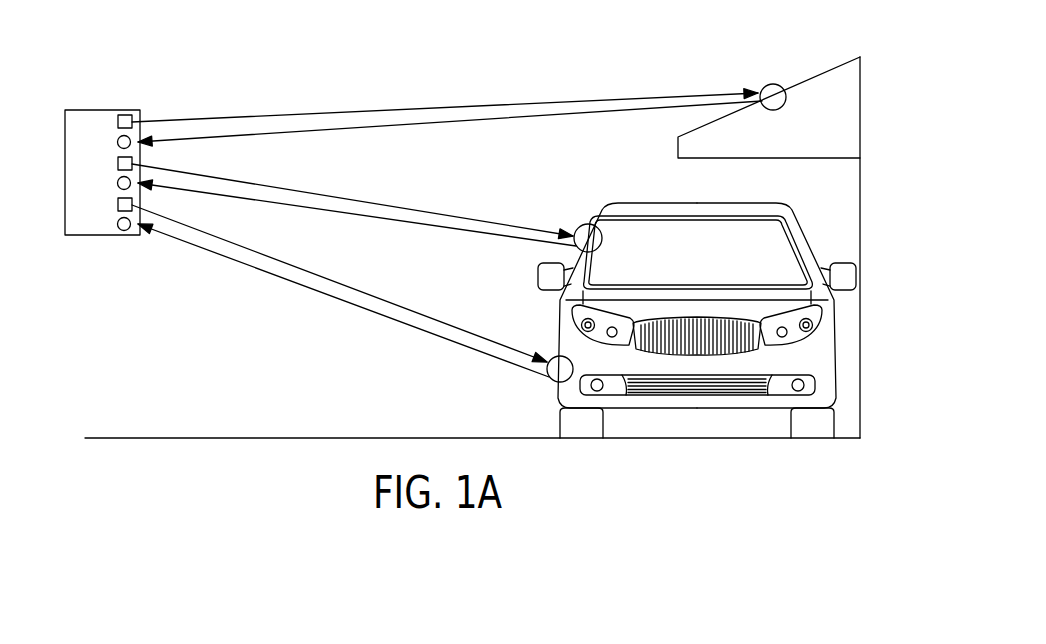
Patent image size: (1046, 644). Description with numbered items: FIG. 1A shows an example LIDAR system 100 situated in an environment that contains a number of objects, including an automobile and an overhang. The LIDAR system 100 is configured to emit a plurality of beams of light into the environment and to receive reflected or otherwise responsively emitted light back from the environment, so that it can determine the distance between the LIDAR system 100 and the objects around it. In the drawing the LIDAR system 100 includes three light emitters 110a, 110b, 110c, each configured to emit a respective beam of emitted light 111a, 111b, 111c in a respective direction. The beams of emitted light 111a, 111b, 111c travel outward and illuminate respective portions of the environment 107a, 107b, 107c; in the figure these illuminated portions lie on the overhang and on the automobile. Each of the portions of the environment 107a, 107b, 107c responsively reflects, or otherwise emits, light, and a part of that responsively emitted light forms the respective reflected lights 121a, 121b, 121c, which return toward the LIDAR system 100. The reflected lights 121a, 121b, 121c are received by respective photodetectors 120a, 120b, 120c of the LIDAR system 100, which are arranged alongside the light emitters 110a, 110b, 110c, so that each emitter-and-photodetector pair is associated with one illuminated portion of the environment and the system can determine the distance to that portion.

The LIDAR system 100 is at (141, 92).
The light emitter 110a is at (122, 115).
The light emitter 110b is at (116, 163).
The light emitter 110c is at (116, 207).
The photodetector 120a is at (118, 140).
The photodetector 120b is at (117, 185).
The photodetector 120c is at (117, 228).
The beam of emitted light 111a is at (285, 113).
The beam of emitted light 111b is at (390, 202).
The beam of emitted light 111c is at (367, 290).
The reflected light 121a is at (350, 128).
The reflected light 121b is at (457, 228).
The reflected light 121c is at (410, 323).
The portion of the environment 107a is at (770, 84).
The portion of the environment 107b is at (576, 228).
The portion of the environment 107c is at (548, 380).